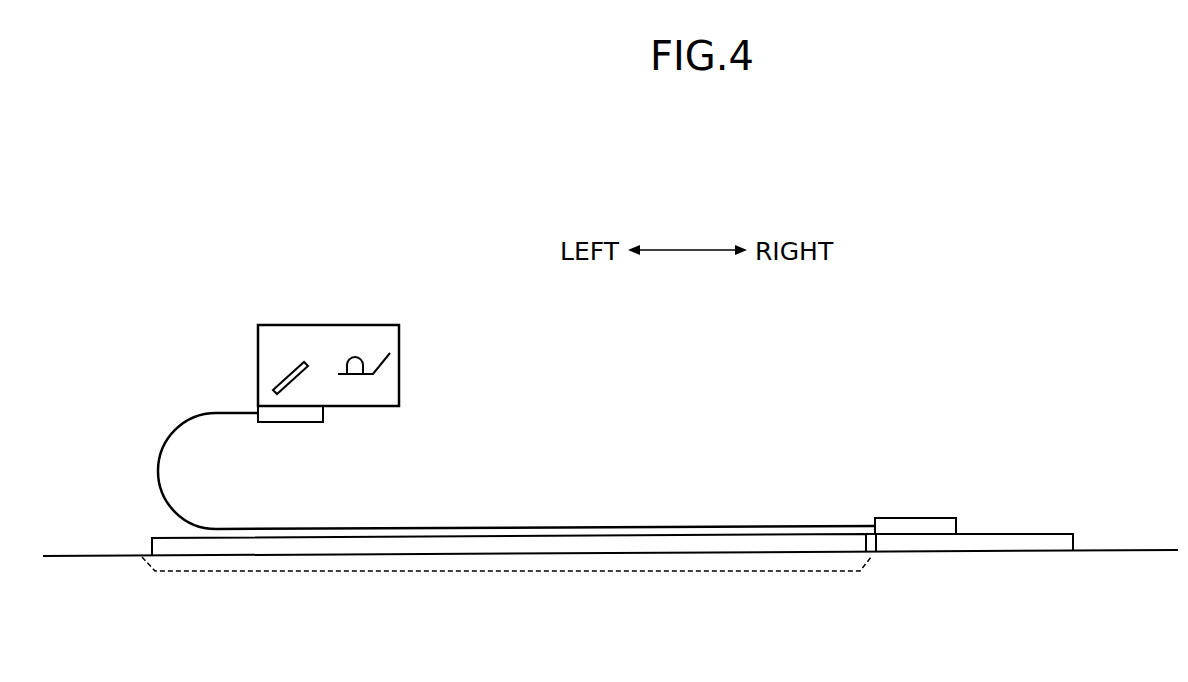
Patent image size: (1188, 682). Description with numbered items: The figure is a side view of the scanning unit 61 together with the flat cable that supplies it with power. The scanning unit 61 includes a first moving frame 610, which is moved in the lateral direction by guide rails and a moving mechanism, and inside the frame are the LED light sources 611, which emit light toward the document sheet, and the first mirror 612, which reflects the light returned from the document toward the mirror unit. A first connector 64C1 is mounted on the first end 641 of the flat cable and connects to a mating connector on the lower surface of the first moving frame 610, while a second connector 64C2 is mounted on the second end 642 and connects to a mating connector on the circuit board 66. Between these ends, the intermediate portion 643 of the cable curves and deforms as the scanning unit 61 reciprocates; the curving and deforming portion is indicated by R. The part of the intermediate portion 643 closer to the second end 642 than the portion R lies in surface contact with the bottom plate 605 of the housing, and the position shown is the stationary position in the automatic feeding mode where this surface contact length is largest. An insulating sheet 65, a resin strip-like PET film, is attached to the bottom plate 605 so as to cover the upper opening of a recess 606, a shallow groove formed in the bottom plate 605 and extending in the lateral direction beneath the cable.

The scanning unit 61 is at (321, 318).
The first moving frame 610 is at (368, 323).
The LED light source 611 is at (365, 357).
The first mirror 612 is at (285, 378).
The first connector 64C1 is at (323, 413).
The first end 641 is at (240, 415).
The intermediate portion 643 is at (399, 527).
The second end 642 is at (855, 523).
The second connector 64C2 is at (933, 518).
The circuit board 66 is at (1045, 534).
The insulating sheet 65 is at (230, 543).
The bottom plate 605 is at (97, 555).
The recess 606 is at (438, 572).
The curving and deforming portion R is at (157, 467).